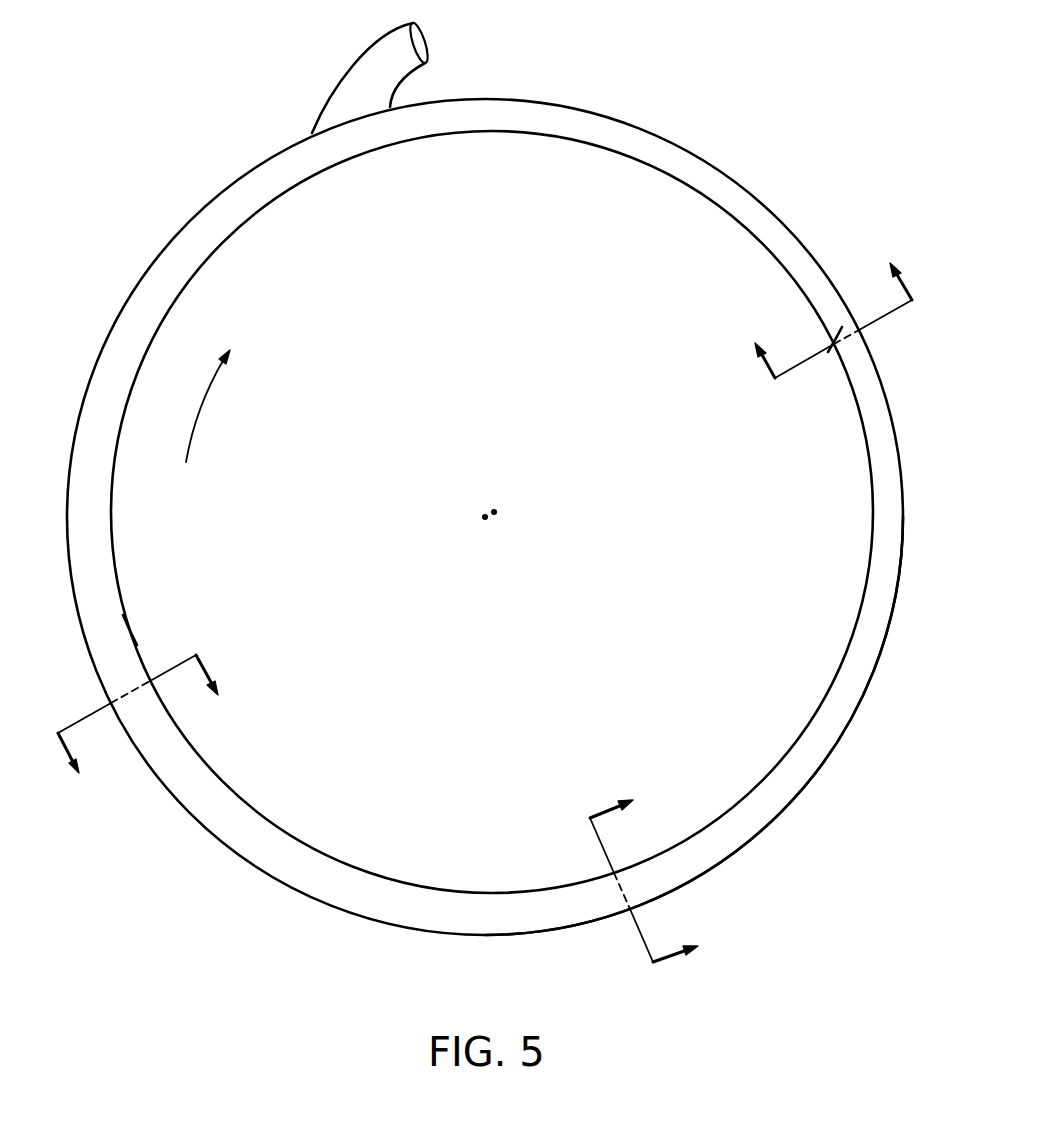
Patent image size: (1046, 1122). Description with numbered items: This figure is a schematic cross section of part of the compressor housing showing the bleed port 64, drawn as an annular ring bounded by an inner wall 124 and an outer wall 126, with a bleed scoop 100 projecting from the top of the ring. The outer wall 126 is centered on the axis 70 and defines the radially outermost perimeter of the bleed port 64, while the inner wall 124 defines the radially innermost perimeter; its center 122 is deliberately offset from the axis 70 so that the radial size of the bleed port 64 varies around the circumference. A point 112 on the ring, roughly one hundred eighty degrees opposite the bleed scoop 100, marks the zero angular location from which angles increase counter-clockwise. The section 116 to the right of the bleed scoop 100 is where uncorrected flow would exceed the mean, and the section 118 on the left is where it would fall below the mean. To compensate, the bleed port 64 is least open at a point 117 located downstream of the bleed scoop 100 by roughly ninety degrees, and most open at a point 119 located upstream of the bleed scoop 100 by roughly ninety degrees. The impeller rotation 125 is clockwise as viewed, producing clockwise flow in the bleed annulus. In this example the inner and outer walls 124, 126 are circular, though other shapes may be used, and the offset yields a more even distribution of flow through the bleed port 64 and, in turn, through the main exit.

The bleed port 64 is at (173, 243).
The axis 70 is at (485, 519).
The bleed scoop 100 is at (359, 56).
The point 112 is at (622, 897).
The section 116 is at (866, 340).
The point 117 is at (848, 330).
The section 118 is at (131, 630).
The point 119 is at (138, 687).
The center 122 is at (496, 512).
The inner wall 124 is at (845, 655).
The rotation 125 is at (207, 398).
The outer wall 126 is at (872, 683).